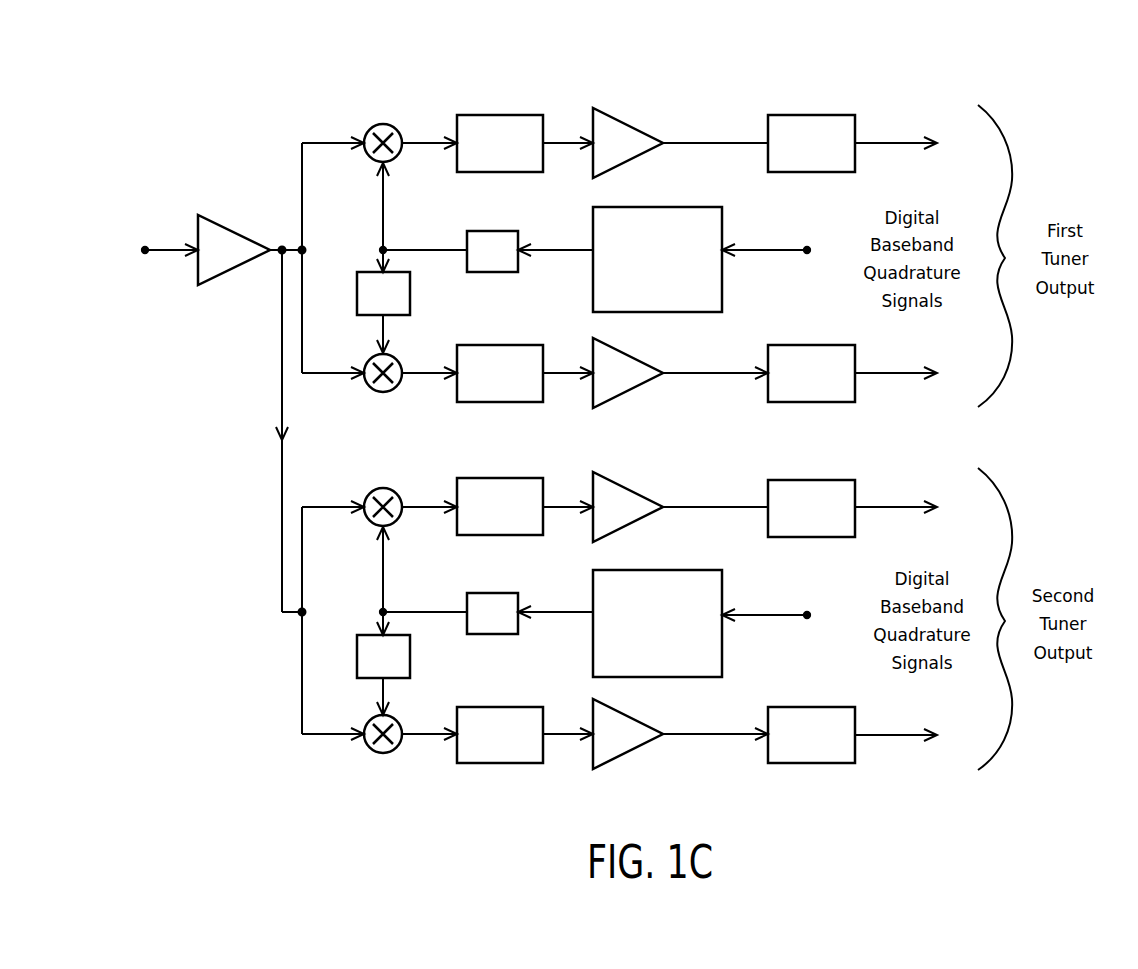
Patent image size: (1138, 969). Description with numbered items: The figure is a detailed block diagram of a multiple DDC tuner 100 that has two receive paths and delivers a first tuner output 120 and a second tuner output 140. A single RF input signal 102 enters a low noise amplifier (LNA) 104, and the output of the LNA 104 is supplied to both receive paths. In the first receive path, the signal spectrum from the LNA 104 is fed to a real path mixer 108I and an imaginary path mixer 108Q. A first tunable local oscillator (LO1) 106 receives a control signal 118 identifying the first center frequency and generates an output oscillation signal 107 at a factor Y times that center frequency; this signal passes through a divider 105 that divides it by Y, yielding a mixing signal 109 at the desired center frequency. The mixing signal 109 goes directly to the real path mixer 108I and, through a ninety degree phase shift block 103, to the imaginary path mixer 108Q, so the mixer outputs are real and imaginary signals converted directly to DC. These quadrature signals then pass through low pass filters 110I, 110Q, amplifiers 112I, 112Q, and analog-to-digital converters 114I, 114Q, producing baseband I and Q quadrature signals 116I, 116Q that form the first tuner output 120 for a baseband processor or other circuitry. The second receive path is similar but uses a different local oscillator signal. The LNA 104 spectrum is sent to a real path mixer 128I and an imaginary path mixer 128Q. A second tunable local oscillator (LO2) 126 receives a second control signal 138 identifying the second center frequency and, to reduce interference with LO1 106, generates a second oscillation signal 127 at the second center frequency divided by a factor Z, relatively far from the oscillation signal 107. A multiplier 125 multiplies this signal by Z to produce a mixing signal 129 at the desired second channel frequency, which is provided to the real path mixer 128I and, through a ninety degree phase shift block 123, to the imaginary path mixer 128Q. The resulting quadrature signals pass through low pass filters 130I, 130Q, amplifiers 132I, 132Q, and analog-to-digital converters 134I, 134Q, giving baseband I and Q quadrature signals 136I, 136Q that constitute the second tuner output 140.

The multiple DDC tuner 100 is at (218, 161).
The RF input signal 102 is at (180, 250).
The low noise amplifier (LNA) 104 is at (236, 232).
The 90 degree phase shift block 103 is at (428, 292).
The divider (÷Y) 105 is at (479, 231).
The first tunable local oscillator (LO1) 106 is at (669, 207).
The output oscillation signal 107 is at (548, 250).
The mixing signal 109 is at (409, 250).
The real path mixer 108I is at (366, 127).
The imaginary path mixer 108Q is at (396, 360).
The low pass filter (LPF) 110I is at (499, 115).
The low pass filter (LPF) 110Q is at (481, 345).
The amplifier (A) 112I is at (647, 115).
The amplifier (A) 112Q is at (630, 340).
The analog-to-digital converter (ADC) 114I is at (795, 117).
The analog-to-digital converter (ADC) 114Q is at (826, 344).
The baseband I quadrature signal 116I is at (895, 143).
The baseband Q quadrature signal 116Q is at (884, 372).
The control signal (CTRL(fC1)) 118 is at (757, 252).
The first tuner output 120 is at (1003, 129).
The 90 degree phase shift block 123 is at (428, 655).
The multiplier 125 is at (479, 593).
The second tunable local oscillator (LO2) 126 is at (670, 570).
The second oscillation signal 127 is at (548, 612).
The mixing signal 129 is at (409, 612).
The real path mixer 128I is at (366, 491).
The imaginary path mixer 128Q is at (396, 722).
The low pass filter (LPF) 130I is at (499, 478).
The low pass filter (LPF) 130Q is at (481, 707).
The amplifier (A) 132I is at (614, 486).
The amplifier (A) 132Q is at (630, 702).
The analog-to-digital converter (ADC) 134I is at (795, 480).
The analog-to-digital converter (ADC) 134Q is at (812, 688).
The baseband I quadrature signal 136I is at (876, 508).
The baseband Q quadrature signal 136Q is at (882, 735).
The second control signal (CTRL(fC2)) 138 is at (757, 615).
The second tuner output 140 is at (1003, 492).